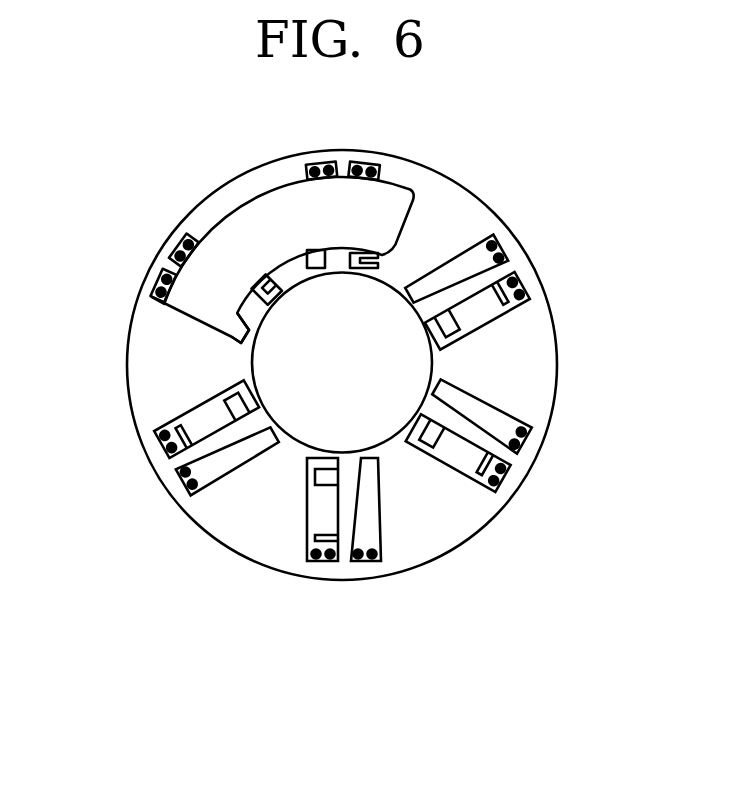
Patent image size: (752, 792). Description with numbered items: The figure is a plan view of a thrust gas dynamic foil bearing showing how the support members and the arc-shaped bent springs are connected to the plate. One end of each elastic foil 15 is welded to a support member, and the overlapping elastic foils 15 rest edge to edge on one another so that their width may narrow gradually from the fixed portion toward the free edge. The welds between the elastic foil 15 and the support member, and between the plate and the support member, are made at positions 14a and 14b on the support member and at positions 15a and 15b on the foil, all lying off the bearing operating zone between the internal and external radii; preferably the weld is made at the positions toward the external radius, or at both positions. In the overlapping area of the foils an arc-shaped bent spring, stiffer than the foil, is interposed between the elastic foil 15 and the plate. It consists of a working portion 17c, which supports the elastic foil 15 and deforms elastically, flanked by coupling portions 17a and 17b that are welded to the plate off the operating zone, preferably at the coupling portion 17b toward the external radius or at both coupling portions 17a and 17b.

The welding position of support member toward external radius 14a is at (518, 255).
The welding position of support member toward internal radius 14b is at (505, 254).
The elastic foil 15 is at (285, 274).
The welding position of elastic foil toward external radius 15a is at (153, 283).
The welding position of elastic foil toward internal radius 15b is at (228, 333).
The coupling portion 17a is at (431, 434).
The coupling portion 17b is at (492, 469).
The working portion 17c is at (458, 453).